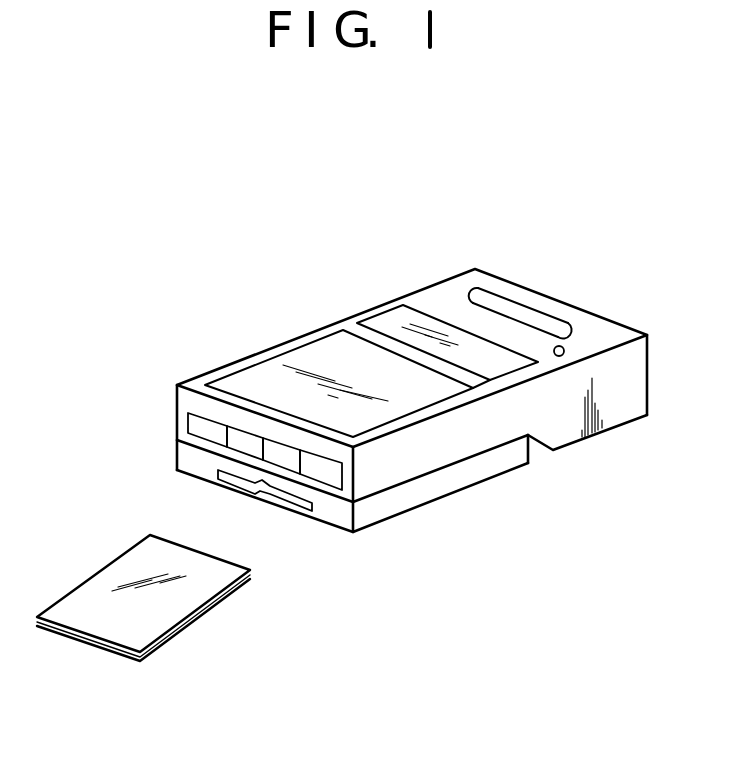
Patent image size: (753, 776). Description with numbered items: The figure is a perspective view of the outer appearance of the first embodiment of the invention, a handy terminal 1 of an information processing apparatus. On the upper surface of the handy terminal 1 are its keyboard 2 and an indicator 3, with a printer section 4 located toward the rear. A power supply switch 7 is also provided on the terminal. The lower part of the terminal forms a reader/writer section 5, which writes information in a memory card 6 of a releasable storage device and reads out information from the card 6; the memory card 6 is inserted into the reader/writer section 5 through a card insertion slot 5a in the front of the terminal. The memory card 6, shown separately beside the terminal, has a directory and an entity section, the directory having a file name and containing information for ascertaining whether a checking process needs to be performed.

The handy terminal 1 is at (328, 327).
The keyboard 2 is at (264, 360).
The indicator 3 is at (392, 318).
The printer section 4 is at (595, 328).
The reader/writer section 5 is at (475, 475).
The card insertion slot 5a is at (293, 500).
The memory card 6 is at (67, 637).
The power supply switch 7 is at (565, 351).